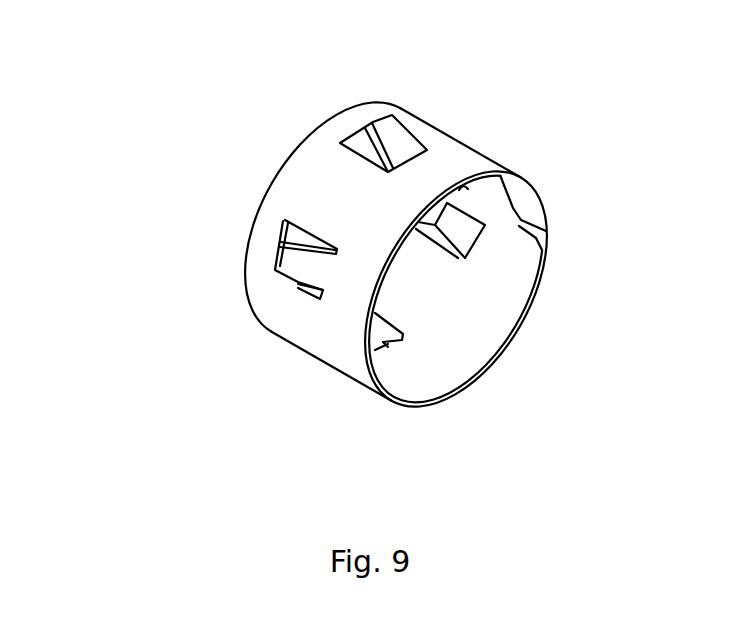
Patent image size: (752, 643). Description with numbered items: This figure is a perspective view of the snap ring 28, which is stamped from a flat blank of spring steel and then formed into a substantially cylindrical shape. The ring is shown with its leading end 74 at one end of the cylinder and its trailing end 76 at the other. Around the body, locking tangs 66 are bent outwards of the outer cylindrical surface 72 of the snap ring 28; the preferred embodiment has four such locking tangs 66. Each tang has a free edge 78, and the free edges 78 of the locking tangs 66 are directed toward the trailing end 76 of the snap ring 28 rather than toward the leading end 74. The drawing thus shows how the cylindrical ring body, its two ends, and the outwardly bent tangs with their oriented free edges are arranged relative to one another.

The snap ring 28 is at (361, 230).
The locking tangs 66 is at (396, 139).
The outer cylindrical surface 72 is at (339, 218).
The leading end 74 is at (521, 325).
The trailing end 76 is at (290, 155).
The free edge 78 is at (380, 120).